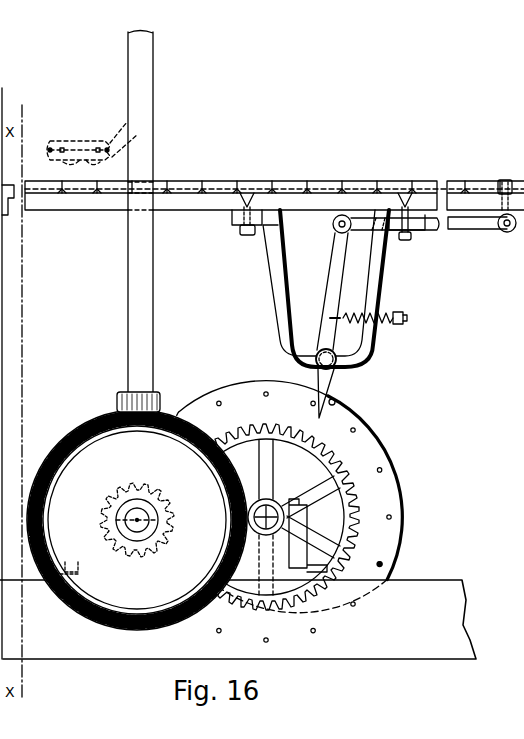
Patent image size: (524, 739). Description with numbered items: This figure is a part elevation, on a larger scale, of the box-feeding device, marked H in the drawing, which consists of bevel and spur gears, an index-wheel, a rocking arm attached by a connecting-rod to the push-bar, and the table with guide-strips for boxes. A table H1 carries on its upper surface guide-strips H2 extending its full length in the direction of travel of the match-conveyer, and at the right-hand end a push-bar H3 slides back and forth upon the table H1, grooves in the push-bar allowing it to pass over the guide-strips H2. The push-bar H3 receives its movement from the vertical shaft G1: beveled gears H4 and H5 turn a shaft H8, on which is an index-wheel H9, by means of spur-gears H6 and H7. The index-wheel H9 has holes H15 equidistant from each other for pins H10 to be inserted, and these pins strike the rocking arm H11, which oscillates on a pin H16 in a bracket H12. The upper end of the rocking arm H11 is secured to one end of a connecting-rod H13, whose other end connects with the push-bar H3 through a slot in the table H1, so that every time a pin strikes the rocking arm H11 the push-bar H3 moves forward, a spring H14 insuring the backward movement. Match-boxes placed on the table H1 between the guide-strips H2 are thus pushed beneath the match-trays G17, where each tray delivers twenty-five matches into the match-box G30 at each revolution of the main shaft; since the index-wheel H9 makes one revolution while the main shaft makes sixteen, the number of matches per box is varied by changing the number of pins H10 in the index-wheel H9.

The vertical shaft G1 is at (155, 80).
The match-tray G17 is at (85, 141).
The match-box G30 is at (320, 178).
The clutch mechanism H is at (379, 308).
The table H1 is at (183, 209).
The guide-strips H2 is at (213, 180).
The push-bar H3 is at (515, 180).
The beveled gear H4 is at (119, 410).
The beveled gear H5 is at (63, 438).
The spur-gear H6 is at (162, 490).
The spur-gear H7 is at (350, 493).
The shaft H8 is at (347, 467).
The index-wheel H9 is at (385, 562).
The pin H10 is at (292, 383).
The rocking arm H11 is at (337, 257).
The bracket H12 is at (282, 294).
The connecting-rod H13 is at (470, 229).
The spring H14 is at (383, 325).
The holes H15 is at (410, 527).
The pin H16 is at (336, 368).